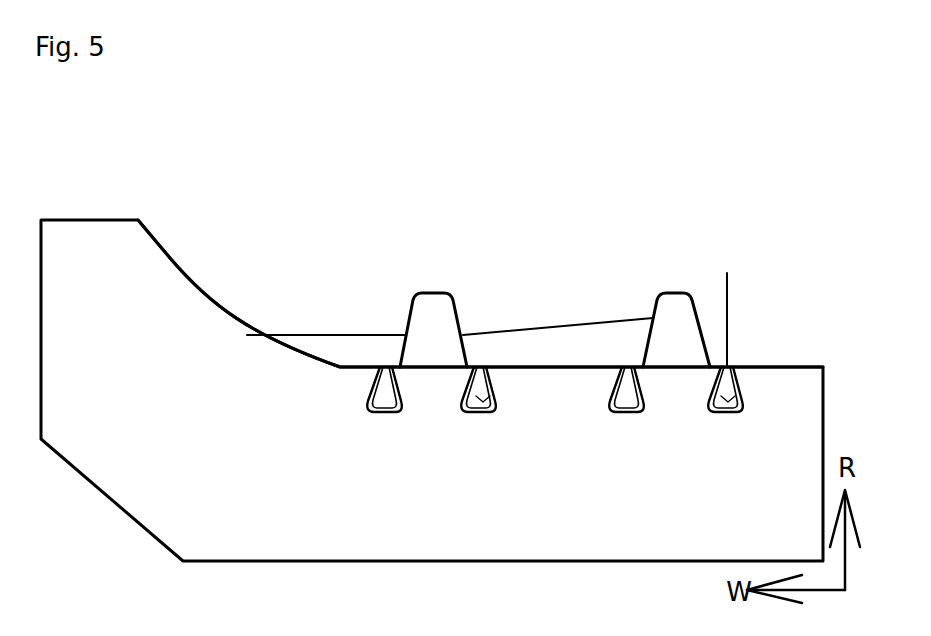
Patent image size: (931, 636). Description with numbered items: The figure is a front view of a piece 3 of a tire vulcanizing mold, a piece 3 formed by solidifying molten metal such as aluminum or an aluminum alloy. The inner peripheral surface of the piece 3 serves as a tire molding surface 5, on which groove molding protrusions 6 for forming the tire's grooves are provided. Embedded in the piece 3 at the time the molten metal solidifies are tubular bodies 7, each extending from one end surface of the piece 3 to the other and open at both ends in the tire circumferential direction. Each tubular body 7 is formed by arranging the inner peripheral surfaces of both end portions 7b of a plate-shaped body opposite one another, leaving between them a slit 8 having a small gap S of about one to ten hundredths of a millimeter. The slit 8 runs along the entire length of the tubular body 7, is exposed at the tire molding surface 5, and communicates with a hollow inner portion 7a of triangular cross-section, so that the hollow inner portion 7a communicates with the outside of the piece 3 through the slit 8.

The piece 3 is at (79, 212).
The tire molding surface 5 is at (186, 278).
The groove molding protrusion 6 is at (303, 345).
The tubular body 7 is at (384, 418).
The hollow inner portion 7a is at (482, 402).
The end portion 7b is at (378, 374).
The slit 8 is at (385, 366).
The small gap S is at (688, 283).